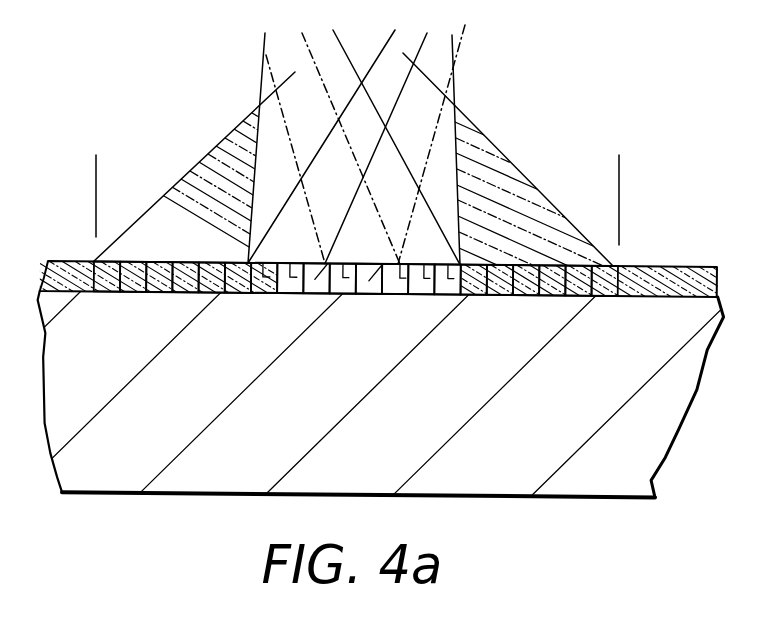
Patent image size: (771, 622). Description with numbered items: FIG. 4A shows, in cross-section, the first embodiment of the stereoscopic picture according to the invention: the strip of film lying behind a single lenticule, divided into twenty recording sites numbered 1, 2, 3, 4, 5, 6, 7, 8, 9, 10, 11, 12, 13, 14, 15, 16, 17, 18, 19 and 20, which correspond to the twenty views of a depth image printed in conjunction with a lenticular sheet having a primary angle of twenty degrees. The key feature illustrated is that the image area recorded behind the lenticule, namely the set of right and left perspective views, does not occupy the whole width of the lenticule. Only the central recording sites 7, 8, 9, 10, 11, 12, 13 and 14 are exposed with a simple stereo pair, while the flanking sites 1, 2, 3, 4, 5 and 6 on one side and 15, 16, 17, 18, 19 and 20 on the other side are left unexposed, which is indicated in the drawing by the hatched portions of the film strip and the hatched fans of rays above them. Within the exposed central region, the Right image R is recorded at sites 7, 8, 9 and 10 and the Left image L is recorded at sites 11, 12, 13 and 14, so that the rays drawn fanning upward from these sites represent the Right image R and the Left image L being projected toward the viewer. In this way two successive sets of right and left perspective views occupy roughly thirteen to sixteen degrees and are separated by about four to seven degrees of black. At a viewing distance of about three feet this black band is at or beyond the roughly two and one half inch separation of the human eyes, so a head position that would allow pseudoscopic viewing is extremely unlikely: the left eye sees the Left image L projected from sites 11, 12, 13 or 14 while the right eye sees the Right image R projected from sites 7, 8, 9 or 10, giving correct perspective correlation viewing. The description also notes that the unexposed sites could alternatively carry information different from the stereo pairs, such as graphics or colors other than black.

The recording site 1 is at (106, 291).
The recording site 2 is at (133, 292).
The recording site 3 is at (159, 292).
The recording site 4 is at (185, 292).
The recording site 5 is at (211, 292).
The recording site 6 is at (237, 293).
The recording site 7 is at (264, 293).
The recording site 8 is at (290, 293).
The recording site 9 is at (316, 293).
The recording site 10 is at (342, 294).
The recording site 11 is at (368, 294).
The recording site 12 is at (395, 294).
The recording site 13 is at (421, 294).
The recording site 14 is at (447, 294).
The recording site 15 is at (473, 295).
The recording site 16 is at (499, 295).
The recording site 17 is at (526, 295).
The recording site 18 is at (552, 295).
The recording site 19 is at (578, 296).
The recording site 20 is at (604, 296).
The Right image R is at (349, 263).
The Left image L is at (447, 265).